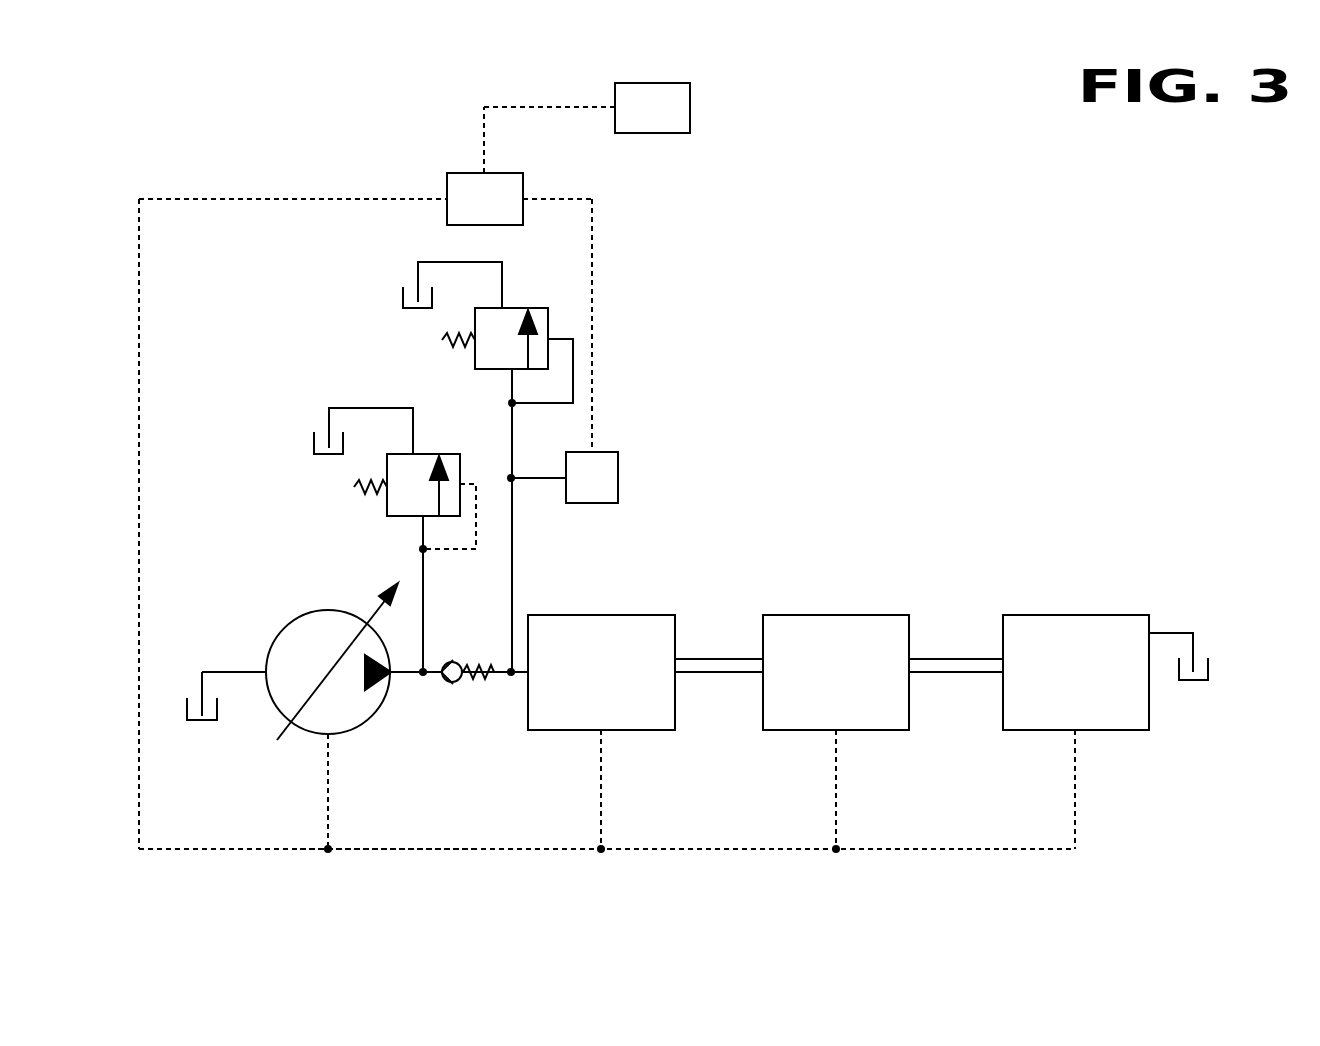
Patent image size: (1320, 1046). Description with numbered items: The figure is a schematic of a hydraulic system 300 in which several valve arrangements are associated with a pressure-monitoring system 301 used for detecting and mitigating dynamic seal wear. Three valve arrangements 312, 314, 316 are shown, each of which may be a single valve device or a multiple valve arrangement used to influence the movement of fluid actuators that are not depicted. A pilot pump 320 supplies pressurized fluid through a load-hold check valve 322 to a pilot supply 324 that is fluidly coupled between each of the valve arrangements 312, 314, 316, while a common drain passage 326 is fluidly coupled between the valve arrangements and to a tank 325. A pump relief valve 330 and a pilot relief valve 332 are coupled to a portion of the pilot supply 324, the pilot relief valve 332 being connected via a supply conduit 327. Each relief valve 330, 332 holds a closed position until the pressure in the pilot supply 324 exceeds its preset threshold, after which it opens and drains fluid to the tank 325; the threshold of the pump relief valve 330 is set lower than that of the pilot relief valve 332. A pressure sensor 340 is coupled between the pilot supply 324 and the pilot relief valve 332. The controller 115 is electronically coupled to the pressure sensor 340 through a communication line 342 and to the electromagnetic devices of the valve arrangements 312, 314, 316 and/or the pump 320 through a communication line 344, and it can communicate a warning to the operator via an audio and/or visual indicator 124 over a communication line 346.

The hydraulic system 300 is at (772, 170).
The pressure-monitoring system 301 is at (246, 538).
The controller 115 is at (500, 211).
The audio and/or visual indicator 124 is at (667, 120).
The valve arrangement 312 is at (616, 684).
The valve arrangement 314 is at (851, 684).
The valve arrangement 316 is at (1090, 684).
The pilot pump 320 is at (355, 729).
The load-hold check valve 322 is at (472, 685).
The pilot supply 324 is at (702, 673).
The tank 325 is at (403, 300).
The common drain passage 326 is at (976, 658).
The supply conduit 327 is at (512, 528).
The pump relief valve 330 is at (385, 512).
The pilot relief valve 332 is at (508, 307).
The pressure sensor 340 is at (607, 489).
The communication line 342 is at (540, 198).
The communication line 344 is at (430, 848).
The communication line 346 is at (483, 125).